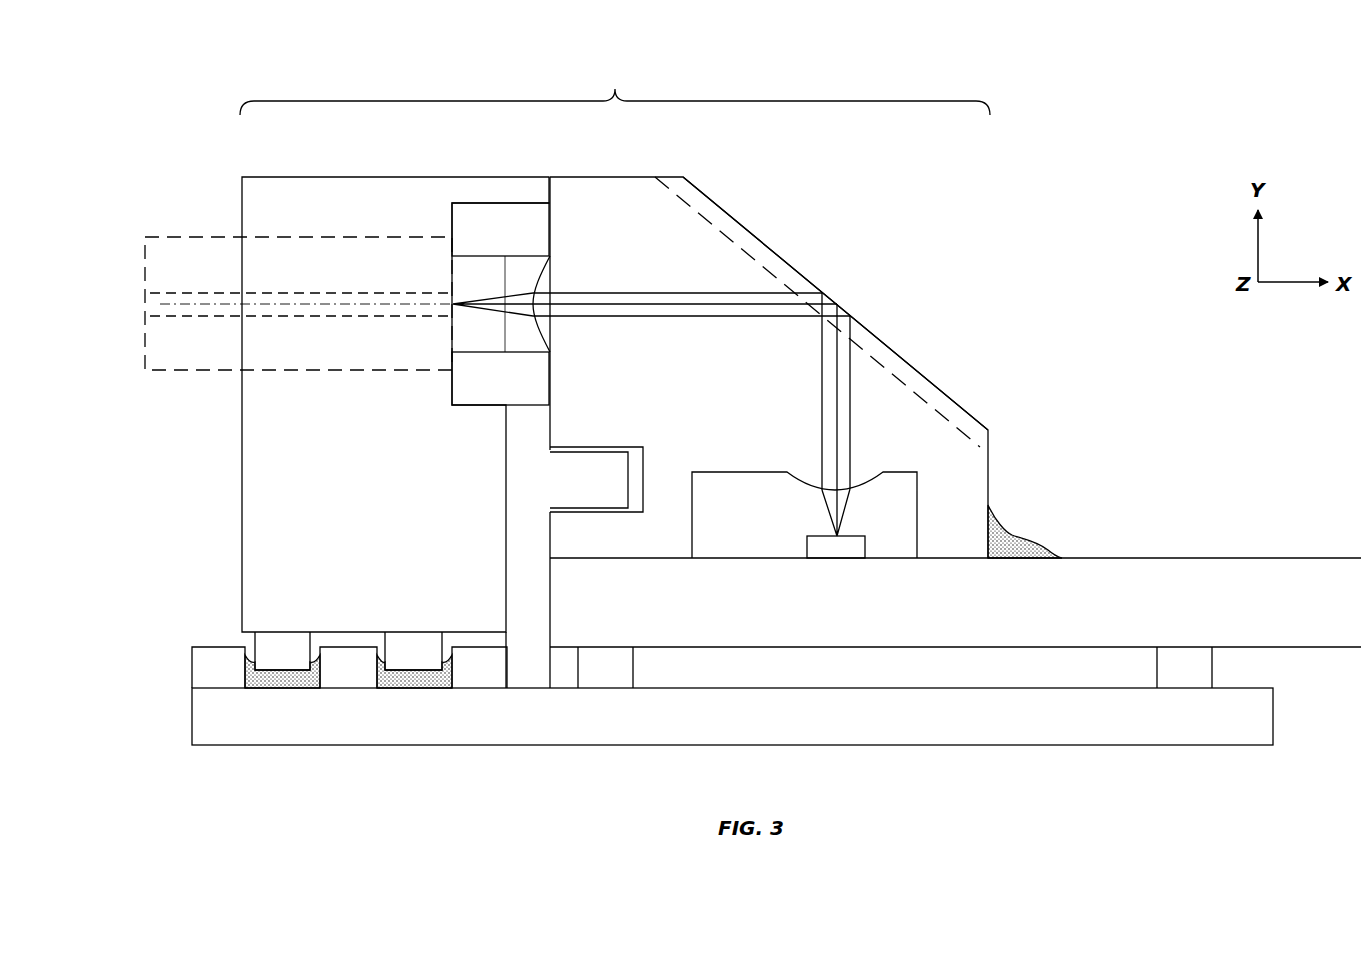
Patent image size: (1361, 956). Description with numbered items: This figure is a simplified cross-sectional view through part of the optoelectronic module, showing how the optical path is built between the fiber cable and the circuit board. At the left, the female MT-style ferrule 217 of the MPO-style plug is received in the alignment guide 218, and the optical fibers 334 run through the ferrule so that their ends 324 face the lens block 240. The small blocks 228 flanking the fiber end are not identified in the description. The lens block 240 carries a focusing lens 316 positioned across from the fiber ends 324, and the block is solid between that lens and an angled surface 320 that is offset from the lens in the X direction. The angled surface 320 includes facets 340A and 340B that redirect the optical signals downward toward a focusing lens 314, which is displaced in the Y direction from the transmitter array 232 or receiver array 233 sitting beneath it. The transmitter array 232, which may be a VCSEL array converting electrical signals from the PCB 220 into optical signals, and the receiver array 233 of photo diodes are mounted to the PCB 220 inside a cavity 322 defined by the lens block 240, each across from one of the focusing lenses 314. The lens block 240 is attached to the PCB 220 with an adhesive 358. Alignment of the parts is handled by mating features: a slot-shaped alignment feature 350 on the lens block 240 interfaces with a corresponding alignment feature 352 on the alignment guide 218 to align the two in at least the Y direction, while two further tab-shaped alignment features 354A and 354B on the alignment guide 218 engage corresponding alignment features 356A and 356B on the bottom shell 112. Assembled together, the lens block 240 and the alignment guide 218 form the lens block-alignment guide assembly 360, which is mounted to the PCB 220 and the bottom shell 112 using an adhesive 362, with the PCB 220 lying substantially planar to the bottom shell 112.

The lens block-alignment guide assembly 360 is at (615, 89).
The female MT-style ferrule 217 is at (203, 236).
The optical fibers 334 is at (160, 304).
The alignment guide 218 is at (347, 214).
The lens mount / spacer blocks 228 is at (478, 217).
The focusing lenses 316 is at (546, 333).
The ends of the optical fibers 324 is at (462, 292).
The lens block 240 is at (635, 214).
The facet 340A is at (698, 205).
The facet 340B is at (745, 228).
The angled surface 320 is at (789, 259).
The alignment feature 350 is at (646, 472).
The alignment feature 352 is at (541, 480).
The cavity 322 is at (749, 539).
The focusing lenses 314 is at (847, 476).
The transmitter array 232 is at (975, 493).
The receiver array 233 is at (868, 547).
The adhesive 358 is at (1021, 531).
The PCB 220 is at (982, 614).
The bottom shell 112 is at (1185, 730).
The adhesive 362 is at (246, 667).
The alignment feature 354A is at (287, 657).
The alignment feature 356A is at (352, 678).
The alignment feature 354B is at (407, 657).
The alignment feature 356B is at (485, 678).